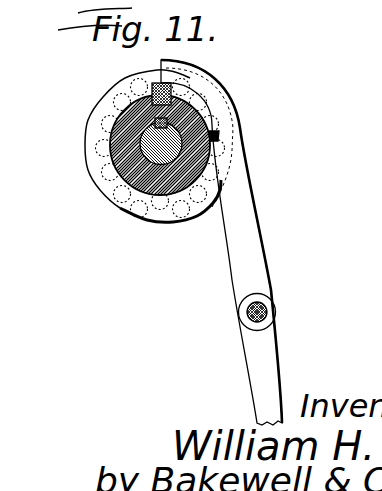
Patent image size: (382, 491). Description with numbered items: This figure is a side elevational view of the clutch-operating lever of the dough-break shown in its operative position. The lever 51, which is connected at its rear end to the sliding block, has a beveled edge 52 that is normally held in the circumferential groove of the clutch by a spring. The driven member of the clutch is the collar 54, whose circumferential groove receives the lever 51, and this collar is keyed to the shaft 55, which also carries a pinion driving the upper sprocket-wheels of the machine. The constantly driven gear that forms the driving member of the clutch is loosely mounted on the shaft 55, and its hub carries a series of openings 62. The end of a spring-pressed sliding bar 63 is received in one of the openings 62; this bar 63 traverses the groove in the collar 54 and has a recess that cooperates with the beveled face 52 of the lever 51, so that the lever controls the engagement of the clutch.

The lever 51 is at (240, 255).
The beveled edge 52 is at (215, 139).
The driven member of the clutch 54 is at (163, 210).
The shaft 55 is at (120, 180).
The openings 62 is at (106, 158).
The sliding bar 63 is at (153, 87).